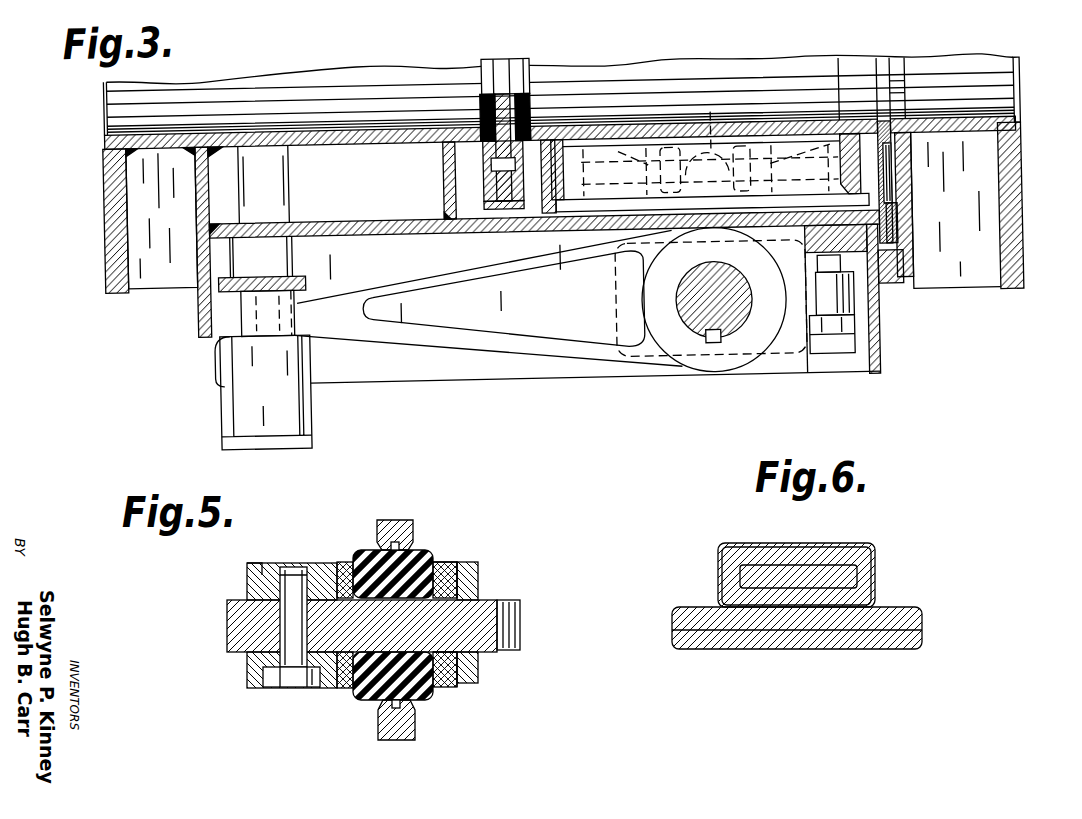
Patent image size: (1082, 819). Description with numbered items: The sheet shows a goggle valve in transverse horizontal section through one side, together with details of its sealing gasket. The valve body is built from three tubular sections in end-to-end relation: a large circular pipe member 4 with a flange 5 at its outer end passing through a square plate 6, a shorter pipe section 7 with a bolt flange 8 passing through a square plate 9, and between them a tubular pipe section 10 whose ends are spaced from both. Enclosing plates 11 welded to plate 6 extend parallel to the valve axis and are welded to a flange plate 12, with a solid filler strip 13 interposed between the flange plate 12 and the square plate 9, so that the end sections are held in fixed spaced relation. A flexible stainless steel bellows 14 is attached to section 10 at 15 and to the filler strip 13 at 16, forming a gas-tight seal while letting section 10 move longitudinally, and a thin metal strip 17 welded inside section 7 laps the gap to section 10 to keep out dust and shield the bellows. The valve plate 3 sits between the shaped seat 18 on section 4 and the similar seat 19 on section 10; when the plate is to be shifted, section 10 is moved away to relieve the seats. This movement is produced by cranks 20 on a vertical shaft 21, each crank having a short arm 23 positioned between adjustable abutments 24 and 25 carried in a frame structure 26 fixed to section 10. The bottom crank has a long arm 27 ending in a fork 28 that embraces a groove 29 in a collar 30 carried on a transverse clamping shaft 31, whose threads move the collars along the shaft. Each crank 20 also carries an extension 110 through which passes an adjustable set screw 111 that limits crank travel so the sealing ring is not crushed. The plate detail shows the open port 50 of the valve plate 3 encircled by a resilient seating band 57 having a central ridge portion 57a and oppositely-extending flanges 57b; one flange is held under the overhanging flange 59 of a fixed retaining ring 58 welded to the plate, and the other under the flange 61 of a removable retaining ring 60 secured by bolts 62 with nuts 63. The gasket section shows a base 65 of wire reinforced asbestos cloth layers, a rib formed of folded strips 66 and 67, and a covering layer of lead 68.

In FIG. 3, the valve plate 3 is at (494, 61).
In FIG. 5, the valve plate 3 is at (237, 628).
In FIG. 3, the circular pipe member 4 is at (264, 122).
In FIG. 3, the flange 5 is at (108, 243).
In FIG. 3, the square plate 6 is at (197, 311).
In FIG. 3, the pipe section 7 is at (963, 119).
In FIG. 3, the bolt flange 8 is at (1023, 218).
In FIG. 3, the square plate 9 is at (925, 273).
In FIG. 3, the tubular pipe section 10 is at (695, 118).
In FIG. 3, the enclosing plates 11 is at (517, 387).
In FIG. 3, the flange plate 12 is at (878, 352).
In FIG. 3, the filler strip 13 is at (879, 297).
In FIG. 3, the bellows 14 is at (900, 185).
In FIG. 3, the bellows attachment to section 10 15 is at (882, 135).
In FIG. 3, the bellows attachment to filler strip 16 is at (899, 232).
In FIG. 3, the thin metal strip 17 is at (916, 108).
In FIG. 3, the valve seat 18 is at (472, 131).
In FIG. 3, the valve seat 19 is at (543, 130).
In FIG. 3, the crank 20 is at (727, 379).
In FIG. 3, the vertical shaft 21 is at (683, 338).
In FIG. 3, the short arm 23 is at (713, 113).
In FIG. 3, the adjustable abutment 24 is at (650, 168).
In FIG. 3, the adjustable abutment 25 is at (808, 135).
In FIG. 3, the frame structure 26 is at (764, 134).
In FIG. 3, the long arm 27 is at (406, 337).
In FIG. 3, the fork 28 is at (290, 325).
In FIG. 3, the groove 29 is at (211, 338).
In FIG. 3, the collar 30 is at (222, 403).
In FIG. 3, the transverse clamping shaft 31 is at (288, 257).
In FIG. 5, the open port 50 is at (508, 615).
In FIG. 3, the seating band 57 is at (472, 158).
In FIG. 5, the seating band 57 is at (390, 528).
In FIG. 5, the central ridge portion 57a is at (432, 560).
In FIG. 5, the flanges 57b is at (345, 570).
In FIG. 5, the fixed retaining ring 58 is at (480, 578).
In FIG. 5, the overhanging flange 59 is at (450, 575).
In FIG. 5, the removable retaining ring 60 is at (252, 592).
In FIG. 5, the flange 61 is at (302, 568).
In FIG. 5, the bolts 62 is at (267, 565).
In FIG. 5, the nuts 63 is at (278, 685).
In FIG. 6, the base 65 is at (785, 650).
In FIG. 6, the folded strip 66 is at (878, 582).
In FIG. 6, the folded strip 67 is at (830, 555).
In FIG. 6, the covering layer of lead 68 is at (730, 550).
In FIG. 3, the extension 110 is at (814, 324).
In FIG. 3, the adjustable set screw 111 is at (843, 351).